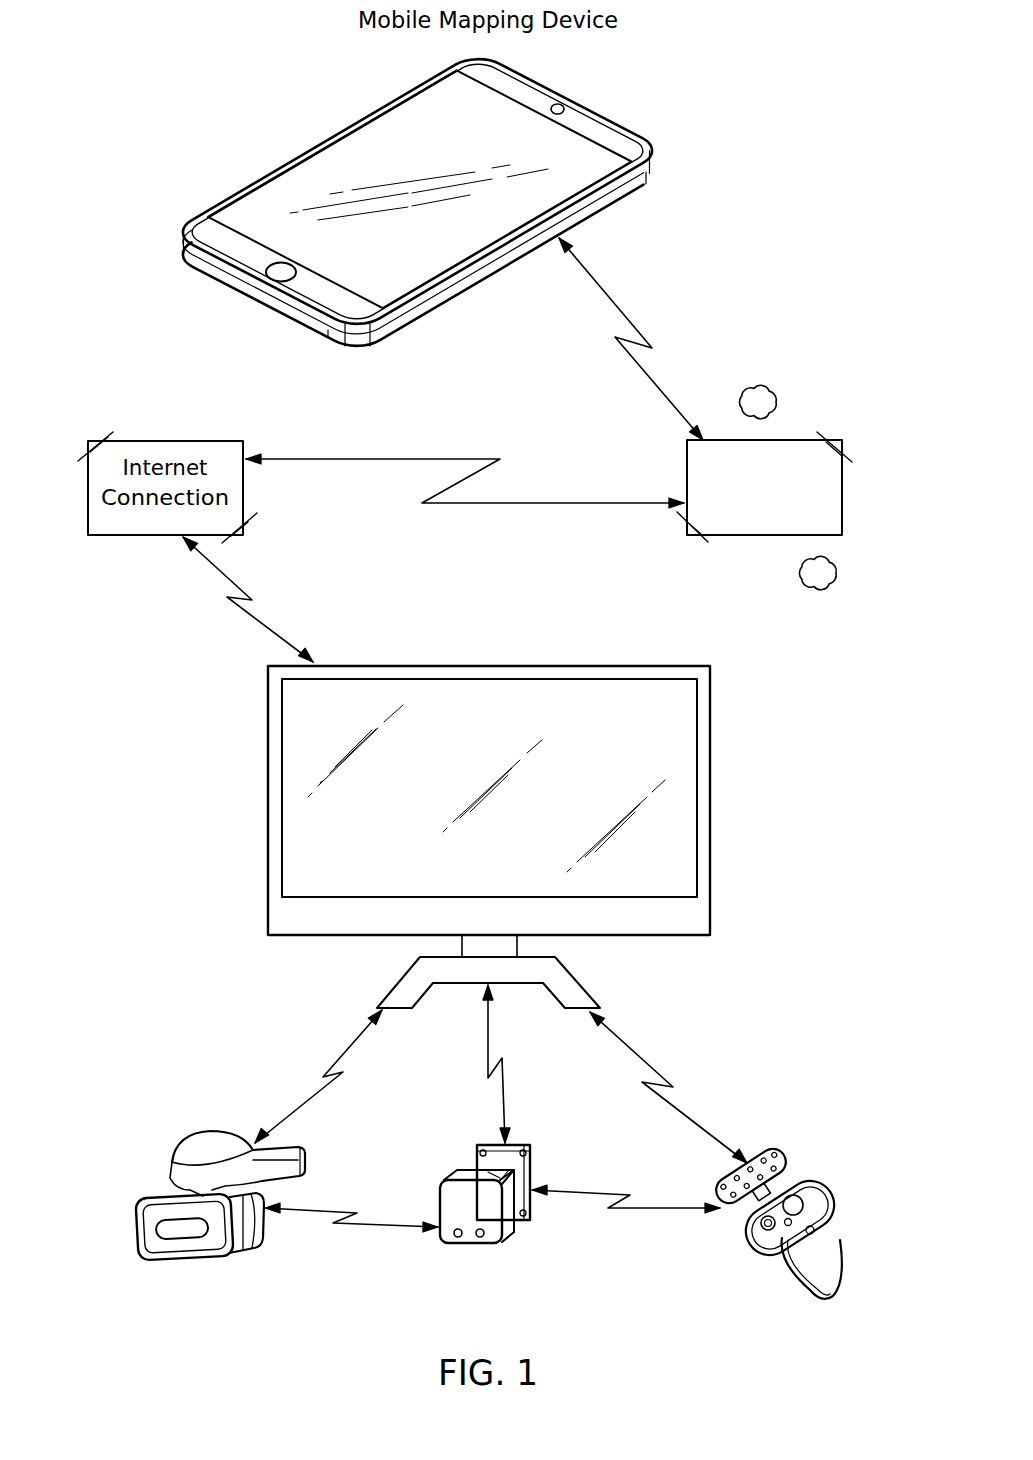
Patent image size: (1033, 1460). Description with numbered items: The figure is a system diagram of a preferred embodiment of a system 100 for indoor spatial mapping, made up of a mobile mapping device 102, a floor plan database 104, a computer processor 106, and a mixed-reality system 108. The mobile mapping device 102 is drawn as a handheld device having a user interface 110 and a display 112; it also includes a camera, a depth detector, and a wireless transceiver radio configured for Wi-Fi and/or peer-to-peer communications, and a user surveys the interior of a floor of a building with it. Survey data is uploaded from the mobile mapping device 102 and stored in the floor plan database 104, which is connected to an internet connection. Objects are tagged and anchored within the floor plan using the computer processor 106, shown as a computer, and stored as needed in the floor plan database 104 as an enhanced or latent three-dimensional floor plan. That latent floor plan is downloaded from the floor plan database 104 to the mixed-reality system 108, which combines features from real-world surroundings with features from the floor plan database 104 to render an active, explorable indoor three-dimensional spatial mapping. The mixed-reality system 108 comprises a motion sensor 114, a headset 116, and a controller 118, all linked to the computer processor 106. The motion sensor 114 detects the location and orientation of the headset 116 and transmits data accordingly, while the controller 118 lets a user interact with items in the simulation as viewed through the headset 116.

The system 100 is at (196, 126).
The mobile mapping device 102 is at (435, 208).
The floor plan database 104 is at (843, 488).
The computer processor 106 is at (710, 800).
The mixed-reality system 108 is at (158, 1105).
The user interface 110 is at (248, 282).
The display 112 is at (537, 187).
The motion sensor 114 is at (466, 1170).
The headset 116 is at (138, 1217).
The controller 118 is at (838, 1236).